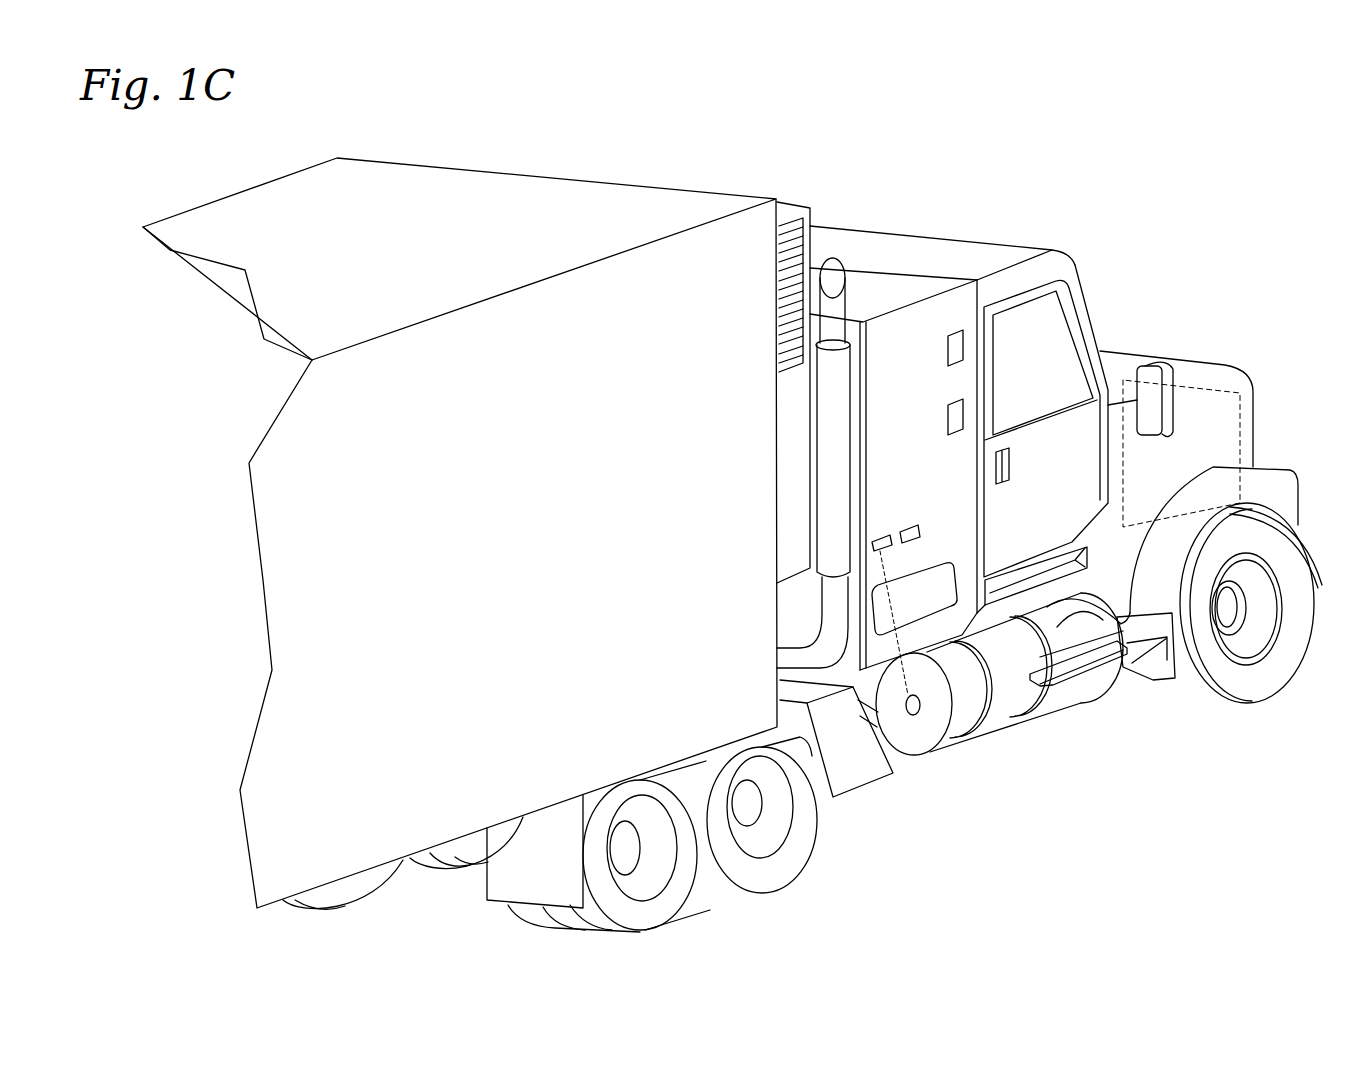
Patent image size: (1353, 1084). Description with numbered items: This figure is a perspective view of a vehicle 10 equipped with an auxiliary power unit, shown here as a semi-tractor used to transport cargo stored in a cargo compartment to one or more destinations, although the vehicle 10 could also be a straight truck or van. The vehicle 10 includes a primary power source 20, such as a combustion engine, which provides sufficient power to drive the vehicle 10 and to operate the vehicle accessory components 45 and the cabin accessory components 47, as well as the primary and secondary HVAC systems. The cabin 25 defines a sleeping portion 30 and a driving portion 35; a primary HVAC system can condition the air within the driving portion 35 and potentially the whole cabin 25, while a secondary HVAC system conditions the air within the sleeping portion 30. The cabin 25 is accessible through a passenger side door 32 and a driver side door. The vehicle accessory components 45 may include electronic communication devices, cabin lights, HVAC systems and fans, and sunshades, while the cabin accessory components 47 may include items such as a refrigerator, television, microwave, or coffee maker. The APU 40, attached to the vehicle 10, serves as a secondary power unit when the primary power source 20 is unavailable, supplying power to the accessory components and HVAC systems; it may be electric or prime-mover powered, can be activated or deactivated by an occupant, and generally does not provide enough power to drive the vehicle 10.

The vehicle 10 is at (983, 155).
The primary power source 20 is at (1228, 362).
The cabin 25 is at (1080, 273).
The sleeping portion 30 is at (888, 285).
The passenger side door 32 is at (1118, 380).
The driving portion 35 is at (1018, 228).
The APU 40 is at (853, 757).
The vehicle accessory components 45 is at (965, 403).
The cabin accessory components 47 is at (911, 543).